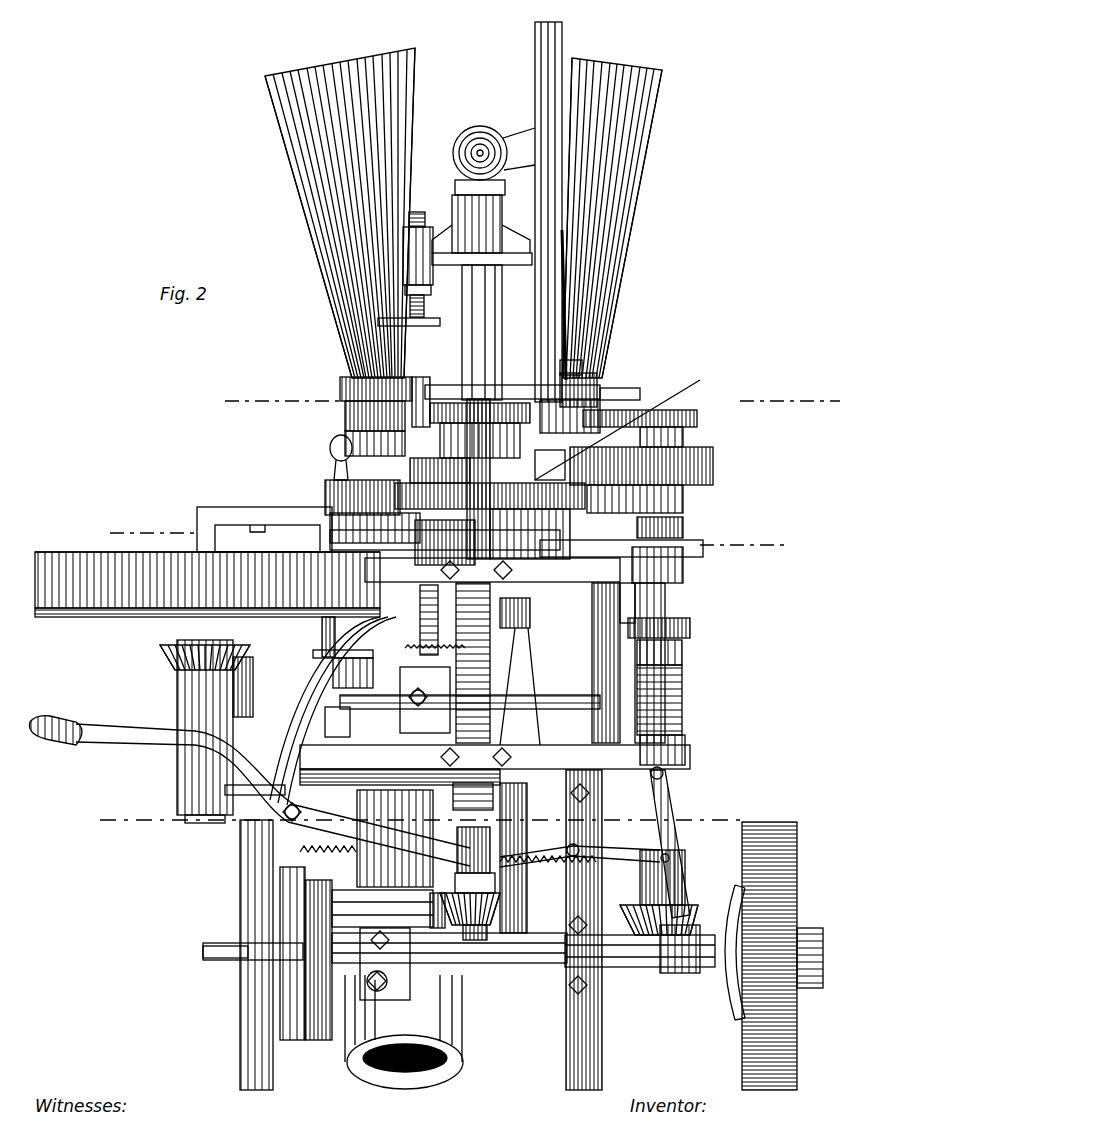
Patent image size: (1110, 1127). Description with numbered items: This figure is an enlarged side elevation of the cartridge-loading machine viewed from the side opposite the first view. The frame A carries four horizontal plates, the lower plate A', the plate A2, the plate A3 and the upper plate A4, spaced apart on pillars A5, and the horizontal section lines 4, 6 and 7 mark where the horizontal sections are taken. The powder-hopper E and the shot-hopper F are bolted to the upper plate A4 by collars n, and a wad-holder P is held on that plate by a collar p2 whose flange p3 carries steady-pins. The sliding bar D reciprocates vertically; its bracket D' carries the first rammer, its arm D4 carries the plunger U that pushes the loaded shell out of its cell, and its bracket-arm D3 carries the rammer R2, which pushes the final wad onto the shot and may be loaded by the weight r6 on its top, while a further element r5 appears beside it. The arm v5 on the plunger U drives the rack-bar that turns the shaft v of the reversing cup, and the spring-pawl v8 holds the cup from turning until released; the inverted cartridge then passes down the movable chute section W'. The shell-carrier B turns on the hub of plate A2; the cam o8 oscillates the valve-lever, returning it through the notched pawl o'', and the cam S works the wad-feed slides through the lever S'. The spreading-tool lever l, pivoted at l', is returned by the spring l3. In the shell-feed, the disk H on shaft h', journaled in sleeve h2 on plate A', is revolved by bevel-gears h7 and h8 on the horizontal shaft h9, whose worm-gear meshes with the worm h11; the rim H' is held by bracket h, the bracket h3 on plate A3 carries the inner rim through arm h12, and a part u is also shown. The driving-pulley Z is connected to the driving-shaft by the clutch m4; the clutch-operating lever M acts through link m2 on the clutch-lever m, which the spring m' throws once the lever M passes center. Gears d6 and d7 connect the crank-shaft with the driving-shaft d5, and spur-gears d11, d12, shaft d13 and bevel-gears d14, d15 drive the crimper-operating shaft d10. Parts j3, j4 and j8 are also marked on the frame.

The powder-hopper E is at (320, 218).
The shot-hopper F is at (634, 128).
The rammer R2 is at (562, 290).
The bracket-arm D3 is at (562, 250).
The roller r5 is at (491, 153).
The weight r6 is at (562, 175).
The bracket or arm D' is at (482, 222).
The sliding bar or shaft D is at (482, 332).
The arm D4 is at (418, 242).
The projecting arm v5 is at (426, 306).
The pivot or shaft v is at (380, 340).
The collar n is at (340, 382).
The plunger U is at (425, 390).
The projecting flange p3 is at (545, 385).
The collar p2 is at (585, 365).
The wad-holder P is at (575, 330).
The section line 4 4 is at (526, 402).
The spring l3 is at (370, 425).
The lever l is at (347, 443).
The pivot l' is at (324, 457).
The notched link or pawl o'' is at (600, 410).
The shell-carrier B is at (623, 426).
The cam o8 is at (697, 412).
The lever S' is at (708, 433).
The cam S is at (653, 466).
The frame-plate A3 is at (683, 495).
The pillars or pedestals A5 is at (683, 525).
The frame-plate A2 is at (703, 552).
The section line 6 6 is at (448, 539).
The stud or bracket h3 is at (215, 512).
The downwardly-projecting arm h12 is at (288, 528).
The rim H' is at (207, 584).
The disk H is at (207, 596).
The vertical sleeve or bearing h2 is at (180, 780).
The bevel-gear h7 is at (160, 650).
The bevel-gear h8 is at (240, 680).
The bracket h is at (329, 652).
The curved arm u is at (329, 711).
The horizontal shaft h9 is at (553, 688).
The section line 7 7 is at (828, 824).
The spring-pawl v8 is at (435, 620).
The lower plate A' is at (508, 752).
The crimper-operating shaft d10 is at (500, 770).
The post j4 is at (665, 600).
The post j3 is at (635, 618).
The flange j8 is at (690, 628).
The worm h11 is at (682, 715).
The pivoted link m2 is at (615, 830).
The clutch-lever m is at (683, 844).
The spring m' is at (679, 877).
The clutch-operating lever M is at (545, 848).
The horizontal driving-shaft d5 is at (560, 960).
The clutch m4 is at (730, 985).
The frame A is at (491, 930).
The driving-pulley and fly-wheel Z is at (782, 956).
The movable lower portion of discharge-chute W' is at (216, 955).
The revolving shaft h' is at (235, 818).
The gear d7 is at (290, 1000).
The spur-gear d11 is at (318, 1040).
The gear d6 is at (285, 972).
The spur-gear d12 is at (330, 895).
The shaft d13 is at (430, 905).
The bevel-gear d14 is at (450, 965).
The bevel-gear d15 is at (500, 880).
The upper frame-plate A4 is at (630, 386).